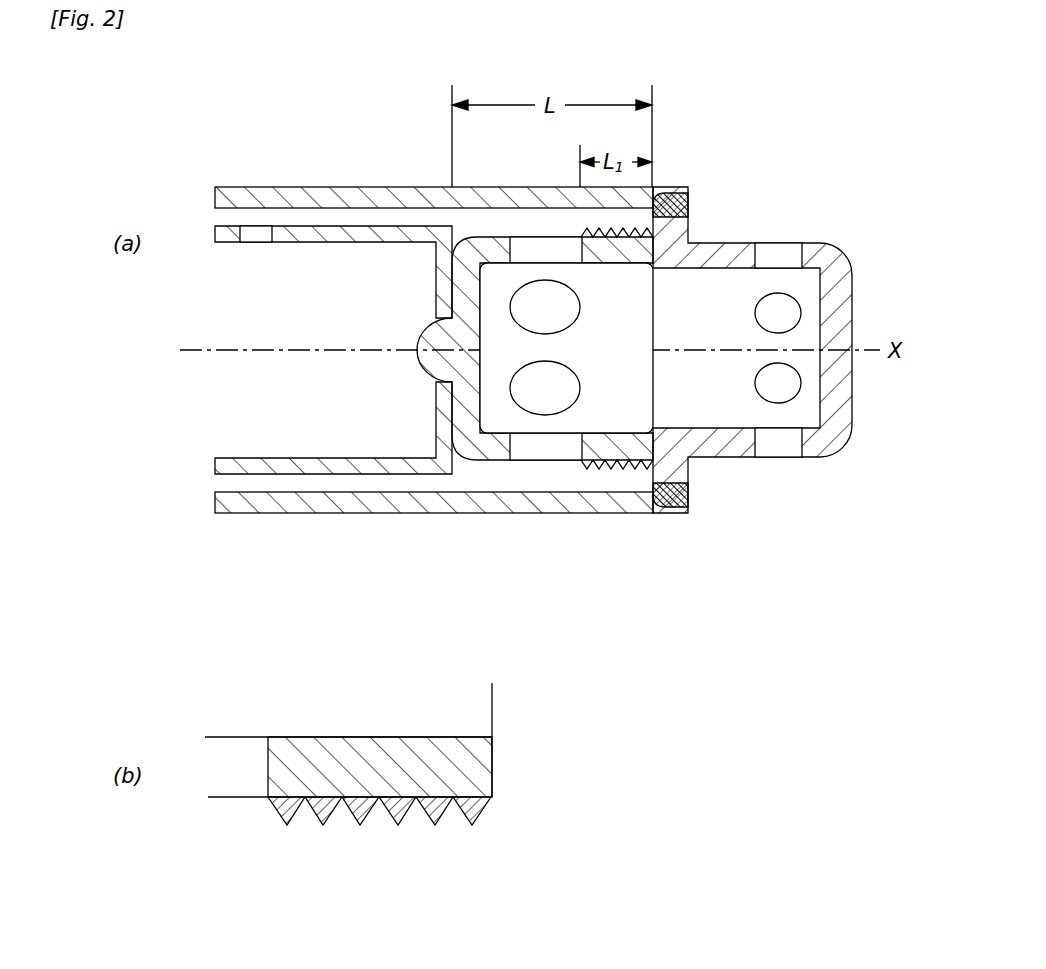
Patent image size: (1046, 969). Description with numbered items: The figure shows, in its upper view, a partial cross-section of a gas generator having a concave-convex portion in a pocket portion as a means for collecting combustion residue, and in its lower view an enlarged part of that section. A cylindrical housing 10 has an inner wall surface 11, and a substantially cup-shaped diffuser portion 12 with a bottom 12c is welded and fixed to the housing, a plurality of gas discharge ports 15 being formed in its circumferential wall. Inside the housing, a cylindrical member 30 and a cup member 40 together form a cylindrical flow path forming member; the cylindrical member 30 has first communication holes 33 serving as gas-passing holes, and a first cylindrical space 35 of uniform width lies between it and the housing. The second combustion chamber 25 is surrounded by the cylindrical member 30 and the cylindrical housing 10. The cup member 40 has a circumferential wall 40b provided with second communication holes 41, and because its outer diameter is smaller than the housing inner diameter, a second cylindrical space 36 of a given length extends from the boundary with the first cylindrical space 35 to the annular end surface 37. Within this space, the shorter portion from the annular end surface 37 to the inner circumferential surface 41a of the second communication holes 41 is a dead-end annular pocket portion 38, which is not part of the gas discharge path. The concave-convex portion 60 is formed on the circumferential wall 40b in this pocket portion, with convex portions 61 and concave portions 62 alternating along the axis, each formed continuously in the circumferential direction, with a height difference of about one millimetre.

The cylindrical housing 10 is at (258, 187).
The inner wall surface 11 is at (405, 211).
The diffuser portion 12 is at (848, 238).
The bottom 12c is at (848, 385).
The gas discharge ports 15 is at (777, 250).
The second combustion chamber 25 is at (282, 412).
The cylindrical member 30 is at (333, 250).
The first communication holes 33 is at (252, 243).
The first cylindrical space 35 is at (310, 220).
The second cylindrical space 36 is at (532, 480).
The annular end surface 37 is at (656, 491).
The annular pocket portion 38 is at (625, 220).
The cup member 40 is at (485, 225).
The circumferential wall 40b is at (487, 462).
The second communication holes 41 is at (521, 254).
The inner circumferential surface 41a is at (582, 253).
The concave-convex portion 60 is at (597, 468).
The convex portions 61 is at (323, 826).
The concave portions 62 is at (343, 801).